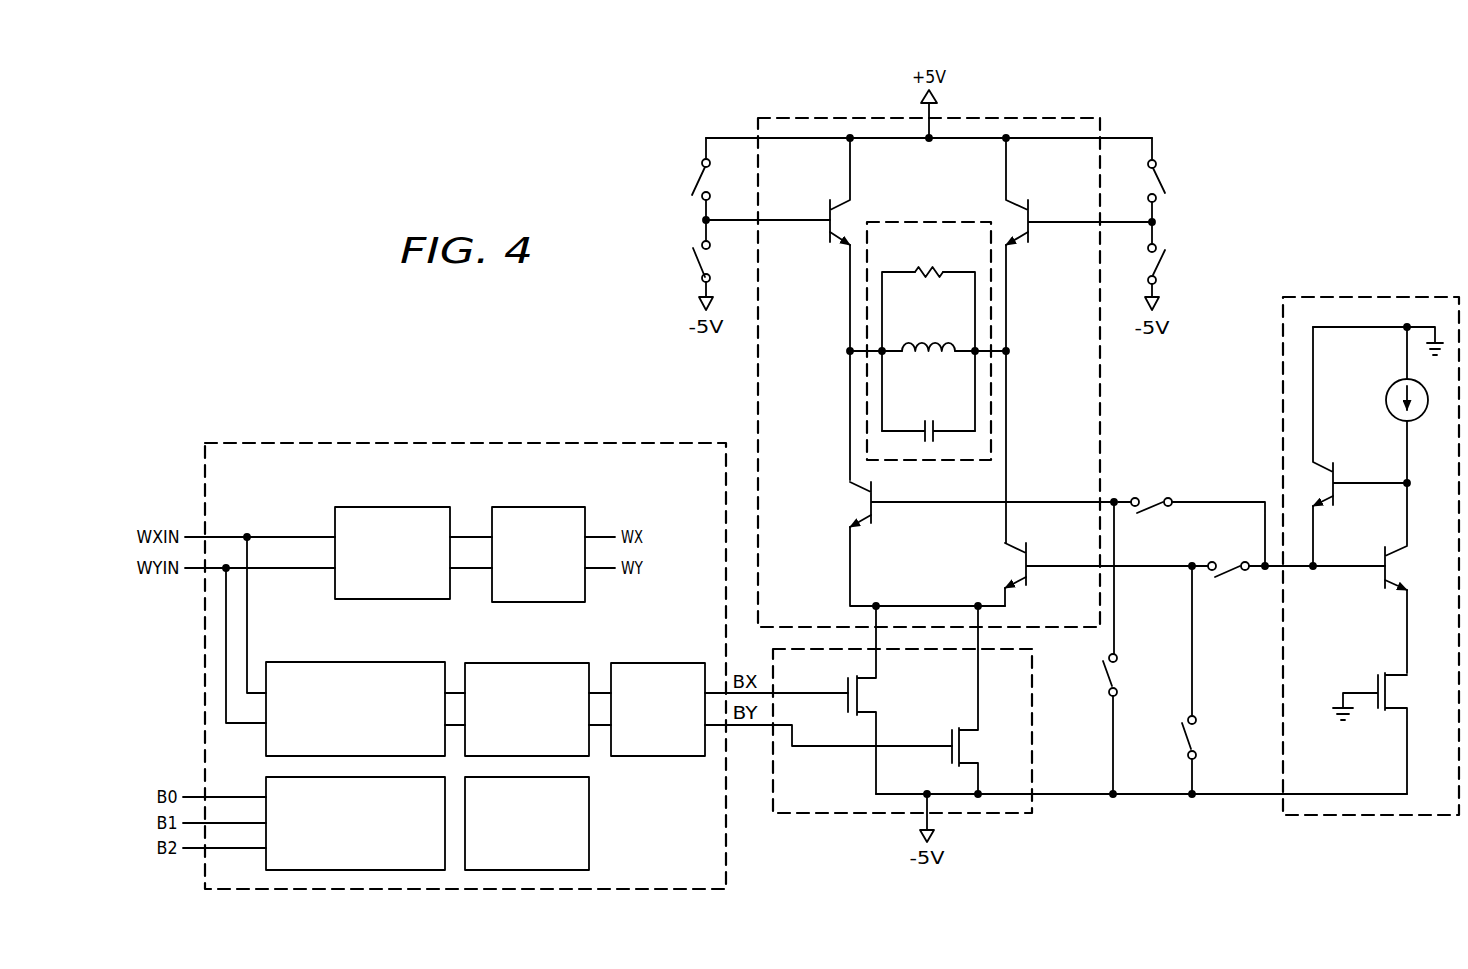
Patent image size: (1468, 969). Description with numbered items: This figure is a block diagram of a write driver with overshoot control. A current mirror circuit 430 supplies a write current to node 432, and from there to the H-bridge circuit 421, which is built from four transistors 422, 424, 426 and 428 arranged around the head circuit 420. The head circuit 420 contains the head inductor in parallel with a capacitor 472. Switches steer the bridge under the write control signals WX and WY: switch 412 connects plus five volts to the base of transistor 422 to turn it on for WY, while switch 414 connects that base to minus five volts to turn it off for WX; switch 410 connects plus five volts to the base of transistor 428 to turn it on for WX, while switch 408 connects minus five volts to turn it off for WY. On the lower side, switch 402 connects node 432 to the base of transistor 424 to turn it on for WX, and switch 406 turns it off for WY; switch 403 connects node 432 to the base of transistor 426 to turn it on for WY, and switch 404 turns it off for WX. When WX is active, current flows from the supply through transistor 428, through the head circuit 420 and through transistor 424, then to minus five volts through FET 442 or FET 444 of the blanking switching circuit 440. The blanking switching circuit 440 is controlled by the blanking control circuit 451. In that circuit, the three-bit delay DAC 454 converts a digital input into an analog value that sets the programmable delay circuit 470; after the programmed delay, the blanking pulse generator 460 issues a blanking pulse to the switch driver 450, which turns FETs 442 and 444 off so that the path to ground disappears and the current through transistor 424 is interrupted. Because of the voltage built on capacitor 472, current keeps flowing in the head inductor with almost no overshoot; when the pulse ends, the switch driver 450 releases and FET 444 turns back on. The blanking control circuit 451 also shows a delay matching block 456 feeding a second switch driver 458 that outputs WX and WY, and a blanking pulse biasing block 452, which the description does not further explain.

The switch 402 is at (1150, 512).
The switch 403 is at (1232, 578).
The switch 404 is at (1180, 742).
The switch 406 is at (1100, 677).
The switch 408 is at (1165, 265).
The switch 410 is at (1165, 180).
The switch 412 is at (699, 186).
The switch 414 is at (695, 262).
The head circuit 420 is at (928, 219).
The H-bridge circuit 421 is at (1013, 117).
The transistor 422 is at (828, 206).
The transistor 424 is at (876, 521).
The transistor 426 is at (1031, 587).
The transistor 428 is at (1032, 205).
The current mirror circuit 430 is at (1380, 295).
The node 432 is at (1297, 572).
The blanking switching circuit 440 is at (833, 815).
The FET 442 is at (845, 684).
The FET 444 is at (950, 762).
The switch driver 450 is at (657, 661).
The blanking control circuit 451 is at (468, 441).
The blanking pulse biasing 452 is at (596, 848).
The 3-bit delay DAC 454 is at (337, 851).
The delay matching 456 is at (392, 505).
The switch driver 458 is at (535, 505).
The blanking pulse generator 460 is at (527, 660).
The programmable delay circuit 470 is at (352, 660).
The capacitor 472 is at (929, 420).